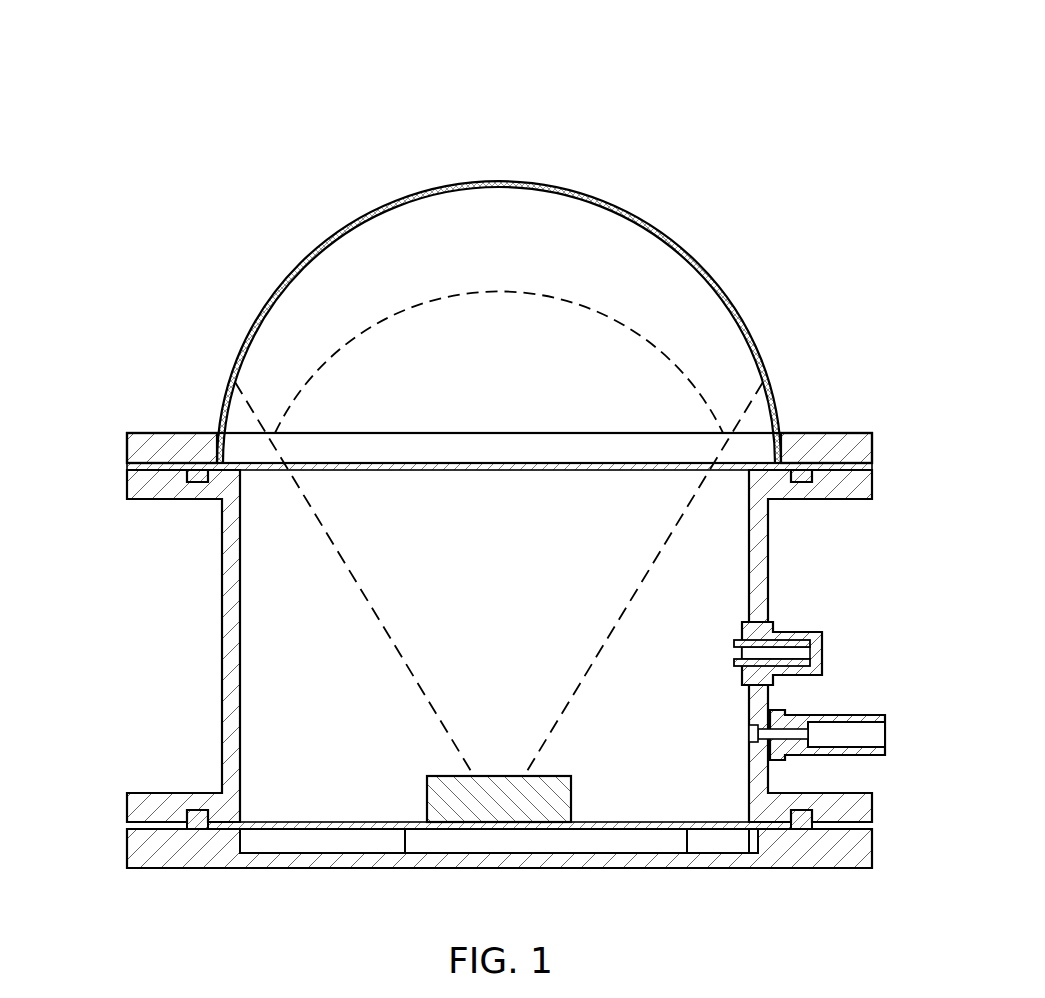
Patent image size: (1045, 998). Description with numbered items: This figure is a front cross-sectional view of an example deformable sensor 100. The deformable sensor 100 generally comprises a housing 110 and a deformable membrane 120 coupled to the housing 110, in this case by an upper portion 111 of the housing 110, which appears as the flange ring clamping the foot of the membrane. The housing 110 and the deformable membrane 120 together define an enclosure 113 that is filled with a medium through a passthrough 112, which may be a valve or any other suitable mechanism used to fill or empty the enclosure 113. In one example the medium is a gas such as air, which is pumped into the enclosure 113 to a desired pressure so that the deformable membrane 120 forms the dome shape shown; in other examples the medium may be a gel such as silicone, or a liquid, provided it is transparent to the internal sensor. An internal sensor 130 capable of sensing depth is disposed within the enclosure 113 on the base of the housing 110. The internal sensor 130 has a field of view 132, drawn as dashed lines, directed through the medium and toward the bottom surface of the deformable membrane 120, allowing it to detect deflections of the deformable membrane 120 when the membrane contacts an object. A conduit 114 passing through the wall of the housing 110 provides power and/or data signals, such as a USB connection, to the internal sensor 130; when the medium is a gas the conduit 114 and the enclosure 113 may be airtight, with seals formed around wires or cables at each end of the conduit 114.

The deformable sensor 100 is at (270, 102).
The housing 110 is at (123, 444).
The upper portion 111 is at (160, 433).
The passthrough 112 is at (811, 614).
The enclosure 113 is at (250, 638).
The conduit 114 is at (870, 706).
The deformable membrane 120 is at (702, 232).
The internal sensor 130 is at (573, 801).
The field of view 132 is at (400, 633).